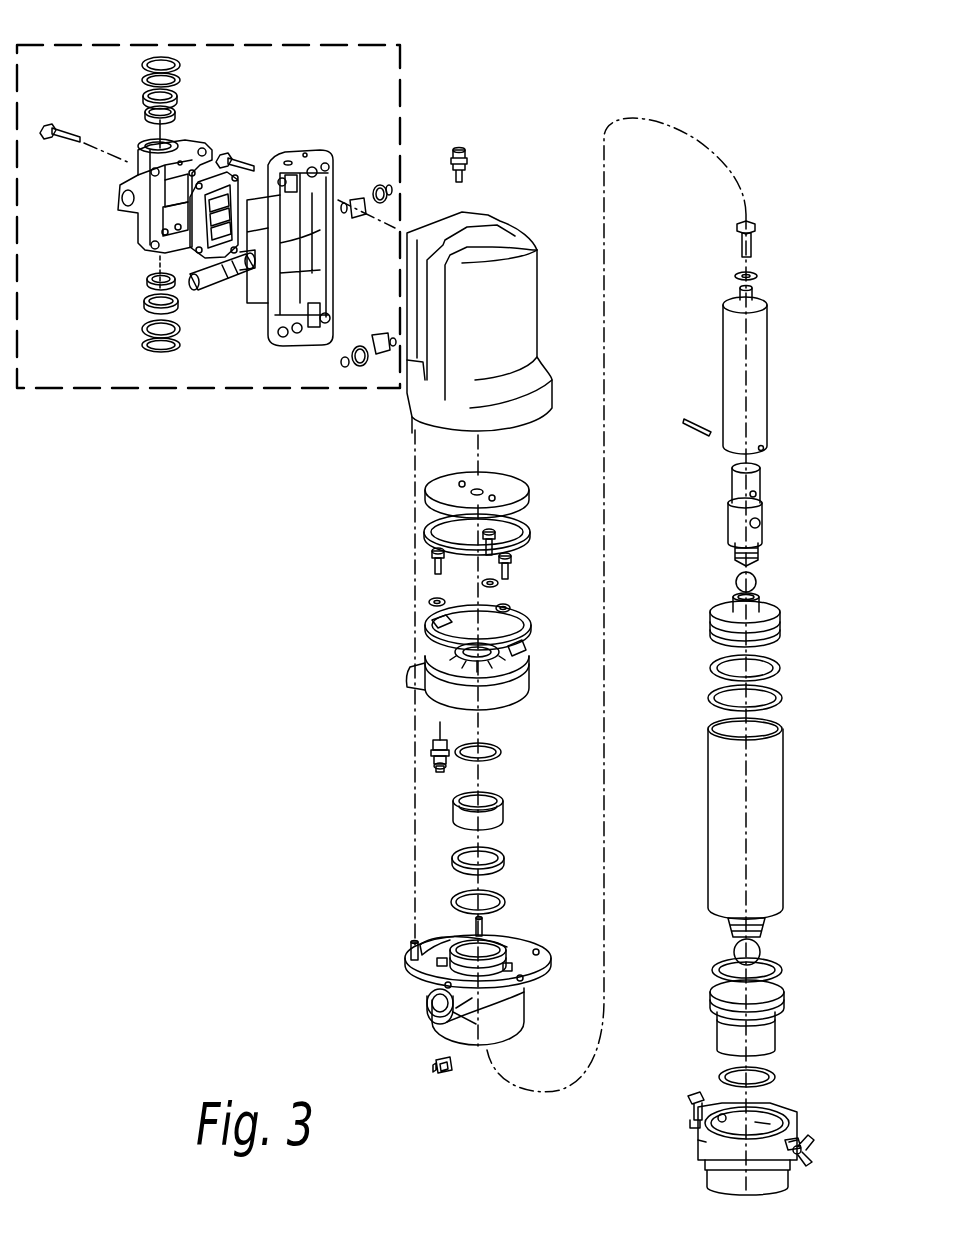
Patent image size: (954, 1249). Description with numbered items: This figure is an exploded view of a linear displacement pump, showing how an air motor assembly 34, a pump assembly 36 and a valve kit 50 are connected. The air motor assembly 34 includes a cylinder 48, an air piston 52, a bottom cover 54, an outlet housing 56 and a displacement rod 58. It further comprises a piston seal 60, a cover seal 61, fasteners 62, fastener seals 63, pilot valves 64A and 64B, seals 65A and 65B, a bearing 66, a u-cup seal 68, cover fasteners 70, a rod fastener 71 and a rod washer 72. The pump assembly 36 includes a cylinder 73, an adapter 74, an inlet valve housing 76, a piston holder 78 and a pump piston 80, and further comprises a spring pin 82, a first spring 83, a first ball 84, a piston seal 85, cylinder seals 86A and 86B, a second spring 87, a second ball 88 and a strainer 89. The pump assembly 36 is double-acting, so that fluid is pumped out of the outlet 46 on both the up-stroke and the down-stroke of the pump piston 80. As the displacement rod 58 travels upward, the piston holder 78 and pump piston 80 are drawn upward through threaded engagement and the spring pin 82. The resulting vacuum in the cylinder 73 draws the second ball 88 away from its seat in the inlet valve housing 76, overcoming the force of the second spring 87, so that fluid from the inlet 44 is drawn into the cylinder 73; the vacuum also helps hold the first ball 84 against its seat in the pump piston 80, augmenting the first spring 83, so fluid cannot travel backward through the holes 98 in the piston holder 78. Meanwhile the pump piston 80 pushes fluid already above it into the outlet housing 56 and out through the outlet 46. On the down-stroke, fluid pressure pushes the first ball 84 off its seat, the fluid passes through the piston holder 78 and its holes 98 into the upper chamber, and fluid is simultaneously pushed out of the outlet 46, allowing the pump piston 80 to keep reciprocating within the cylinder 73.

The air motor assembly 34 is at (520, 208).
The pump assembly 36 is at (792, 919).
The inlet 44 is at (718, 1057).
The outlet 46 is at (430, 1005).
The cylinder 48 is at (498, 300).
The valve kit 50 is at (402, 74).
The air piston 52 is at (430, 492).
The bottom cover 54 is at (442, 690).
The outlet housing 56 is at (432, 1040).
The displacement rod 58 is at (756, 372).
The piston seal 60 is at (428, 529).
The cover seal 61 is at (425, 632).
The fasteners 62 is at (428, 557).
The fastener seals 63 is at (476, 581).
The pilot valve 64A is at (476, 157).
The pilot valve 64B is at (428, 751).
The seal 65A is at (492, 752).
The seal 65B is at (498, 896).
The bearing 66 is at (497, 800).
The u-cup seal 68 is at (452, 859).
The cover fasteners 70 is at (406, 953).
The rod fastener 71 is at (752, 240).
The rod washer 72 is at (758, 277).
The cylinder 73 is at (765, 777).
The adapter 74 is at (700, 1144).
The inlet valve housing 76 is at (717, 1036).
The piston holder 78 is at (758, 488).
The pump piston 80 is at (770, 605).
The spring pin 82 is at (702, 433).
The first spring 83 is at (758, 549).
The first ball 84 is at (758, 581).
The piston seal 85 is at (780, 669).
The cylinder seal 86A is at (783, 699).
The cylinder seal 86B is at (785, 993).
The second spring 87 is at (760, 939).
The second ball 88 is at (768, 961).
The strainer 89 is at (775, 1079).
The holes 98 is at (762, 525).